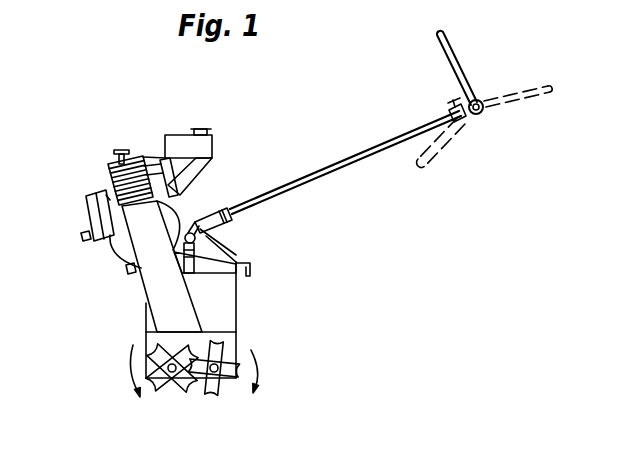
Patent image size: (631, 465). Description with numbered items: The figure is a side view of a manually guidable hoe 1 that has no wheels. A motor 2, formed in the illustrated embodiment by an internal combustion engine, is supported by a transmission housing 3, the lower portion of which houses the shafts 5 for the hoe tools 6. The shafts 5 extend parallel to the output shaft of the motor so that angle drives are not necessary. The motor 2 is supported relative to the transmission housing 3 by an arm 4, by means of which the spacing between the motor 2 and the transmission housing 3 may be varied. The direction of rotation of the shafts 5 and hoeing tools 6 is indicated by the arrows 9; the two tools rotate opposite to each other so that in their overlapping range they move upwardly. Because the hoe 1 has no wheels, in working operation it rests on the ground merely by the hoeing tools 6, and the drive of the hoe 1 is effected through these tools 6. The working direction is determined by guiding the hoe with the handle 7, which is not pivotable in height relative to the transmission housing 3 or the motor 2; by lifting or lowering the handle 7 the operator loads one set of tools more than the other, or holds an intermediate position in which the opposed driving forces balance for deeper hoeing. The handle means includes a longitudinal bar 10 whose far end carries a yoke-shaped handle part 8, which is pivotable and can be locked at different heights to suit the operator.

The hoe 1 is at (92, 286).
The motor 2 is at (196, 183).
The transmission housing 3 is at (249, 293).
The arm 4 is at (220, 247).
The shafts 5 is at (174, 395).
The hoe tools 6 is at (230, 397).
The handle 7 is at (382, 170).
The handle part 8 is at (474, 52).
The arrows 9 is at (130, 372).
The longitudinal bar 10 is at (270, 184).